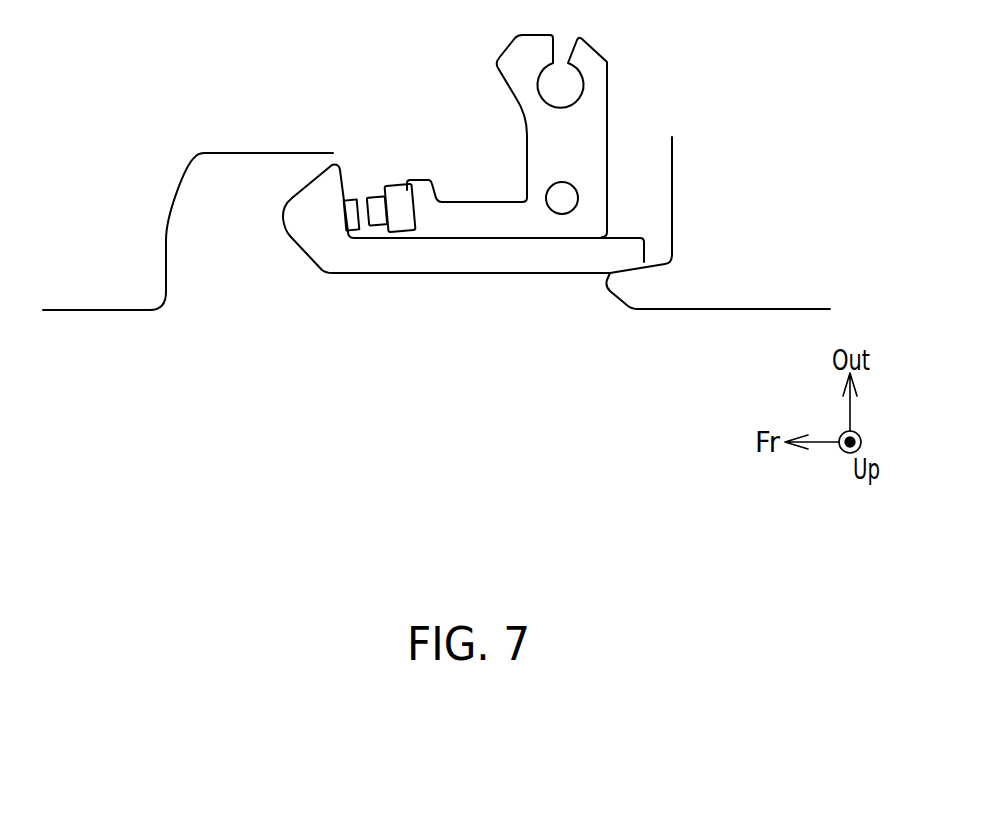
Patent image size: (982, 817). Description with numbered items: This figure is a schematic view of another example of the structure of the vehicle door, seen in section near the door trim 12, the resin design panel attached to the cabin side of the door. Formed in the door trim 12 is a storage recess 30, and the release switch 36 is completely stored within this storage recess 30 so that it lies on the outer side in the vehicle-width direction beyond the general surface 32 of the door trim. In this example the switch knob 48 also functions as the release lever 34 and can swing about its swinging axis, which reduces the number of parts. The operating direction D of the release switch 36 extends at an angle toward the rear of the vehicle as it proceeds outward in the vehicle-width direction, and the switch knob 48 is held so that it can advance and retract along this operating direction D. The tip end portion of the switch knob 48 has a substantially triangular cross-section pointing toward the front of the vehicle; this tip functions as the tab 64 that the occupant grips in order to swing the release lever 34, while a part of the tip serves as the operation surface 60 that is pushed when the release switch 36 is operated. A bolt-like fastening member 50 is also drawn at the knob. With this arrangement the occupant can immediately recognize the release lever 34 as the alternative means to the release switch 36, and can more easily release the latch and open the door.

The door trim 12 is at (103, 293).
The storage recess 30 is at (240, 218).
The general surface 32 is at (710, 310).
The release lever 34 is at (488, 209).
The release switch 36 is at (507, 136).
The switch knob 48 is at (378, 265).
The bolt 50 is at (395, 197).
The operation surface 60 is at (303, 252).
The tab 64 is at (297, 186).
The operating direction D is at (302, 236).